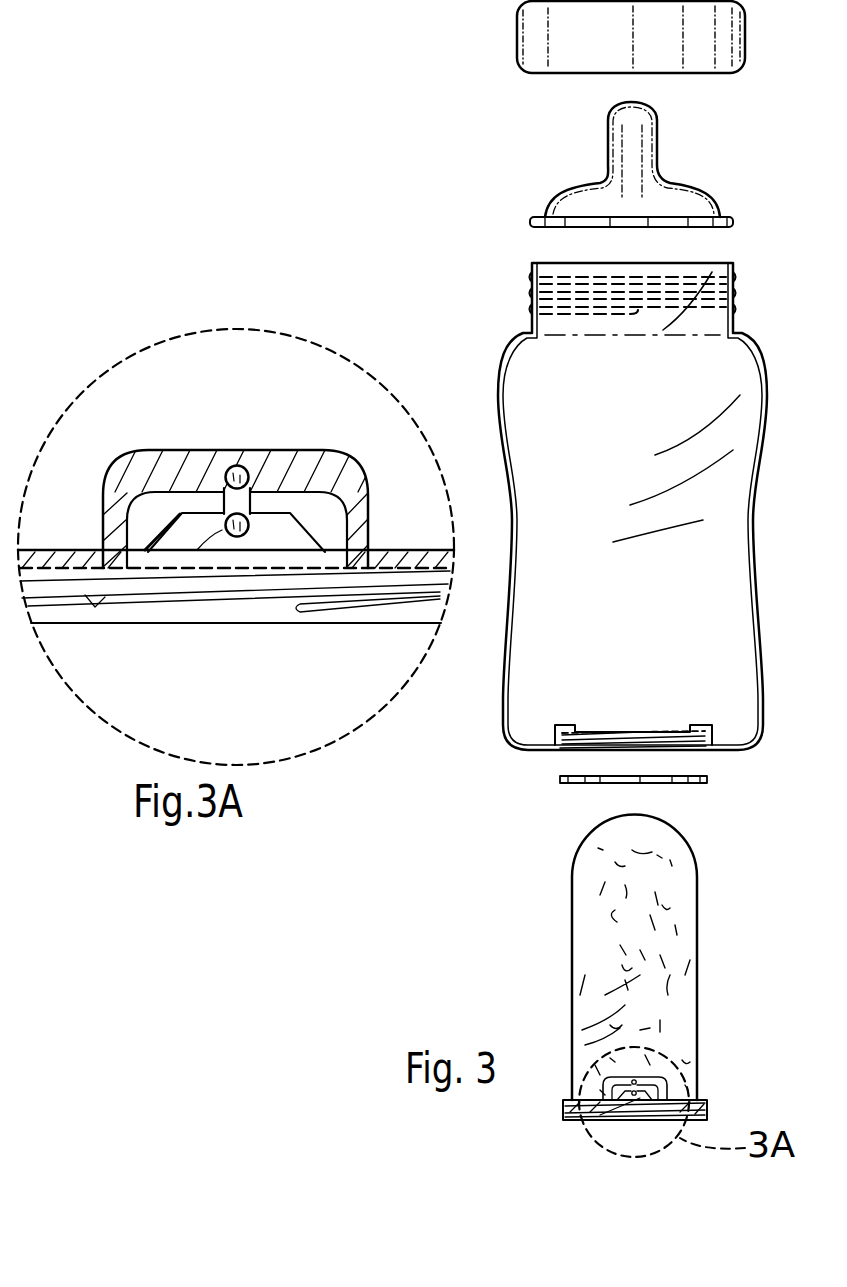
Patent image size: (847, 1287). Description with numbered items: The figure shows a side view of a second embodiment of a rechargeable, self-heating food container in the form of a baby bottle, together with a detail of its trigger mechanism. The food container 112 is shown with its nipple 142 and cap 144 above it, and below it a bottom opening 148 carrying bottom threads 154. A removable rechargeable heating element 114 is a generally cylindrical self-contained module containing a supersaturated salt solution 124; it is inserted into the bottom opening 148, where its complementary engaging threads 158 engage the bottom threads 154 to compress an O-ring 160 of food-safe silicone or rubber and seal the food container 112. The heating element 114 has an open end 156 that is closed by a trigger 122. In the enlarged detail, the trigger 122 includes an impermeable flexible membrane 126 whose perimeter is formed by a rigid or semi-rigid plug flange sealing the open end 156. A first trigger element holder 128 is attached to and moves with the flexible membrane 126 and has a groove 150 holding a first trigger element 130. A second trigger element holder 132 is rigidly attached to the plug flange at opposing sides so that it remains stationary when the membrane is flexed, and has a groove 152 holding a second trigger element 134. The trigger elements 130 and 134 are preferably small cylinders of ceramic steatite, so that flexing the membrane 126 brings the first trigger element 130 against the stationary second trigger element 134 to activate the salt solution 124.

In FIG. 3, the food container 112 is at (763, 432).
In FIG. 3, the removable rechargeable heating element 114 is at (703, 888).
In FIG. 3, the trigger 122 is at (640, 1077).
In FIG. 3, the supersaturated salt solution 124 is at (680, 985).
In FIG. 3A, the flexible membrane 126 is at (160, 557).
In FIG. 3A, the first trigger element holder 128 is at (293, 540).
In FIG. 3A, the first trigger element 130 is at (225, 530).
In FIG. 3A, the second trigger element holder 132 is at (360, 454).
In FIG. 3A, the second trigger element 134 is at (229, 468).
In FIG. 3, the nipple 142 is at (693, 190).
In FIG. 3, the cap 144 is at (746, 36).
In FIG. 3, the bottom opening 148 is at (632, 740).
In FIG. 3A, the groove 150 is at (248, 536).
In FIG. 3A, the groove 152 is at (254, 467).
In FIG. 3, the bottom threads 154 is at (706, 746).
In FIG. 3, the open end 156 is at (612, 1102).
In FIG. 3, the engaging threads 158 is at (562, 1112).
In FIG. 3, the O-ring 160 is at (561, 778).